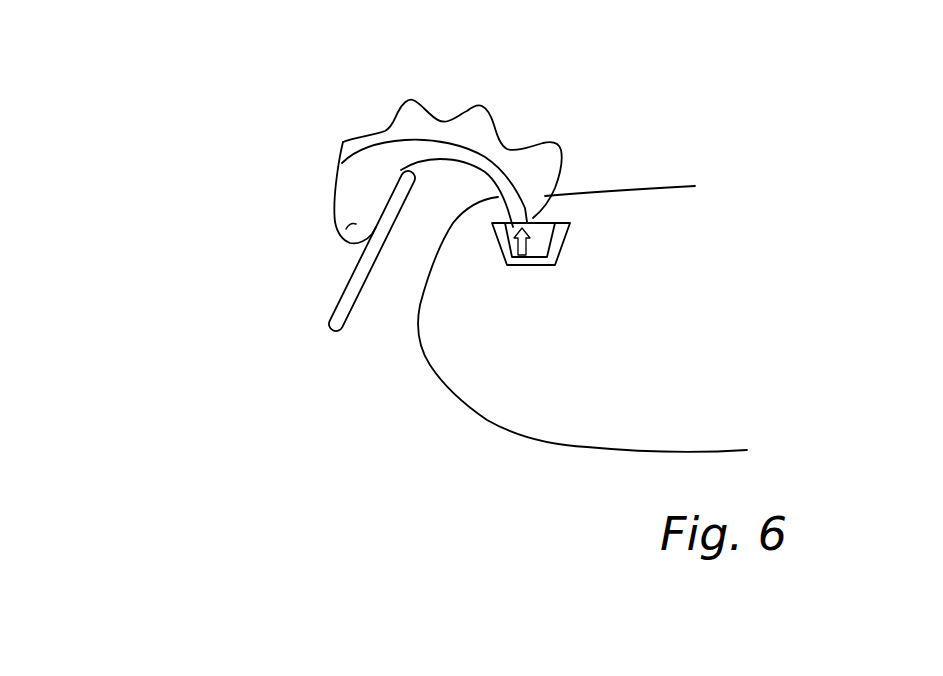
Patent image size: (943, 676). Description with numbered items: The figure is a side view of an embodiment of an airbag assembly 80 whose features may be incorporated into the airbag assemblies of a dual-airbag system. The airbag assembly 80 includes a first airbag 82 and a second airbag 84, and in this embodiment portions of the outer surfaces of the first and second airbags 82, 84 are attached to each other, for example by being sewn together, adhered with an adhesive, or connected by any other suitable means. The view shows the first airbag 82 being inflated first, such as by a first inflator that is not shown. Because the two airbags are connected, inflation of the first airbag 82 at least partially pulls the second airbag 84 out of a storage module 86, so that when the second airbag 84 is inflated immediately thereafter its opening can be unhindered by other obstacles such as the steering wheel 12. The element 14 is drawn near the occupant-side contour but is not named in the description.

The airbag assembly 80 is at (183, 97).
The first airbag 82 is at (338, 242).
The second airbag 84 is at (482, 130).
The storage module 86 is at (563, 240).
The steering wheel 12 is at (338, 320).
The patient face 14 is at (445, 382).